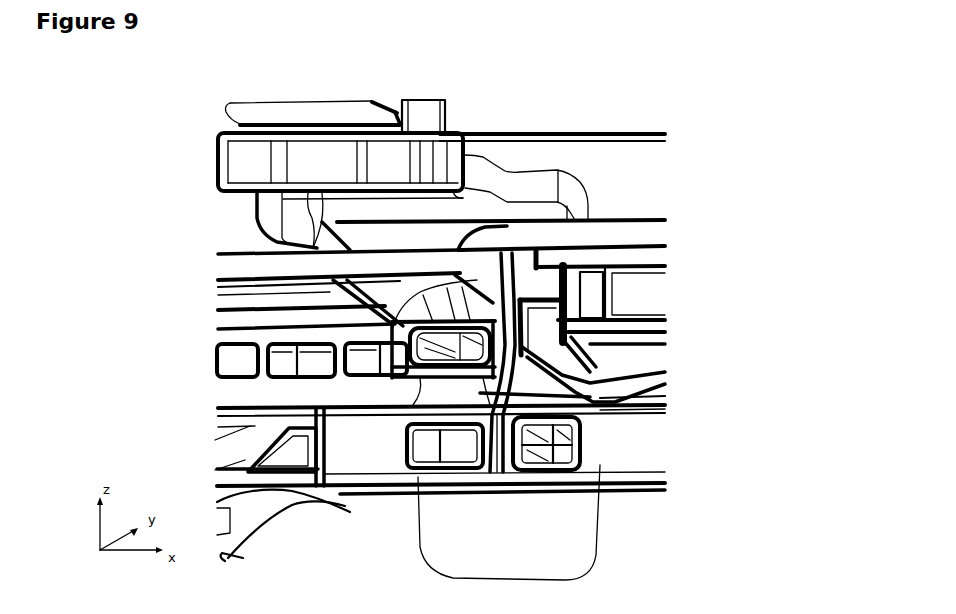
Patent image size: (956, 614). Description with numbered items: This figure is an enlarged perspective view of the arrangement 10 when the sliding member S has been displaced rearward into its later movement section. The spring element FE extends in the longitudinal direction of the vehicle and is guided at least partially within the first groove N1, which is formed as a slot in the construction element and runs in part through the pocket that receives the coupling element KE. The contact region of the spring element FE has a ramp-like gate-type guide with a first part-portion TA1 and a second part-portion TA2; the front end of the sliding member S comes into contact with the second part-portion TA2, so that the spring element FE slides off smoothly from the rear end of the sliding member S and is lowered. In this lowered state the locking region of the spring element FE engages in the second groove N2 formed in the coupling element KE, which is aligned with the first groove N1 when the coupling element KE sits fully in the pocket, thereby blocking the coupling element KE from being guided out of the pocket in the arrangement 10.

The assembly 10 is at (759, 73).
The first groove N1 is at (530, 265).
The second groove N2 is at (477, 486).
The first part-portion TA1 is at (523, 488).
The second part-portion TA2 is at (650, 412).
The coupling element KE is at (443, 372).
The spring element FE is at (665, 380).
The sliding member S is at (509, 535).